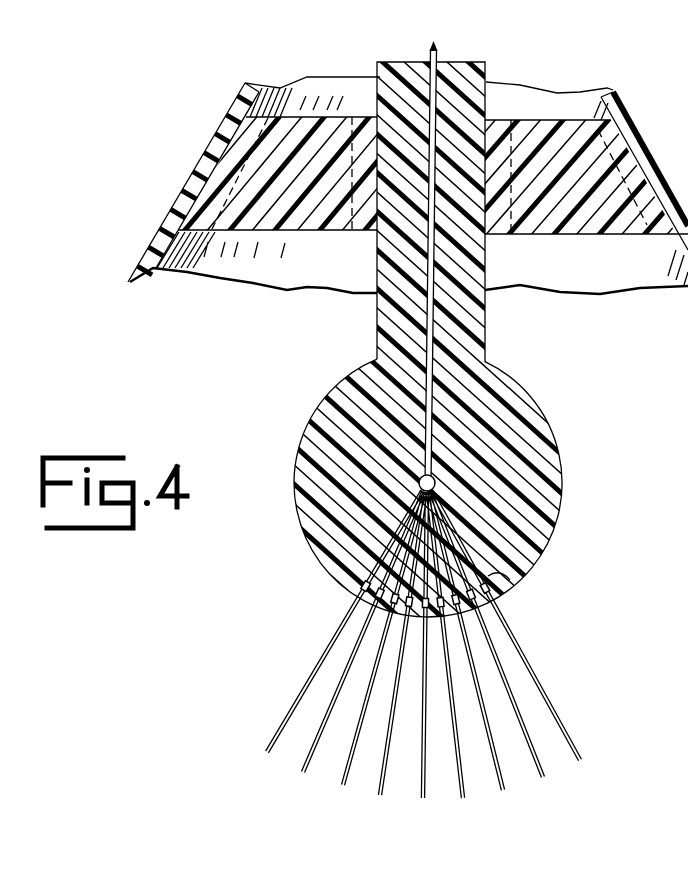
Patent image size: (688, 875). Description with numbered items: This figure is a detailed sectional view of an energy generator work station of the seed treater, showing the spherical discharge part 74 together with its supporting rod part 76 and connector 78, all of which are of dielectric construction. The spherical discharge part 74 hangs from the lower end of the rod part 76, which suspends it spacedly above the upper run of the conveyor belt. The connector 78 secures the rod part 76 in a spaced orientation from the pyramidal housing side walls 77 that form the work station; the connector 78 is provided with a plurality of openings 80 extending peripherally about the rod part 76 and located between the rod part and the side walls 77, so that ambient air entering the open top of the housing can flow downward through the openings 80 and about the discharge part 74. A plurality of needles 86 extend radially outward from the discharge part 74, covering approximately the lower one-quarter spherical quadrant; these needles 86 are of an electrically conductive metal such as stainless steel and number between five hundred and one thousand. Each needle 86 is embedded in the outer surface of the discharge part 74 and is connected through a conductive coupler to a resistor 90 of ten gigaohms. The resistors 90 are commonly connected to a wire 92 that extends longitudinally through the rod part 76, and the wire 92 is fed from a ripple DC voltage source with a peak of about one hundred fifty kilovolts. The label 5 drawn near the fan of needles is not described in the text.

The strand holding clips arrow 5 is at (505, 597).
The spherical discharge part 74 is at (325, 396).
The rod part 76 is at (485, 305).
The pyramidal housing side walls 77 is at (158, 242).
The connector 78 is at (500, 118).
The openings 80 is at (307, 212).
The needles 86 is at (310, 677).
The resistor 90 is at (360, 583).
The wire 92 is at (428, 320).